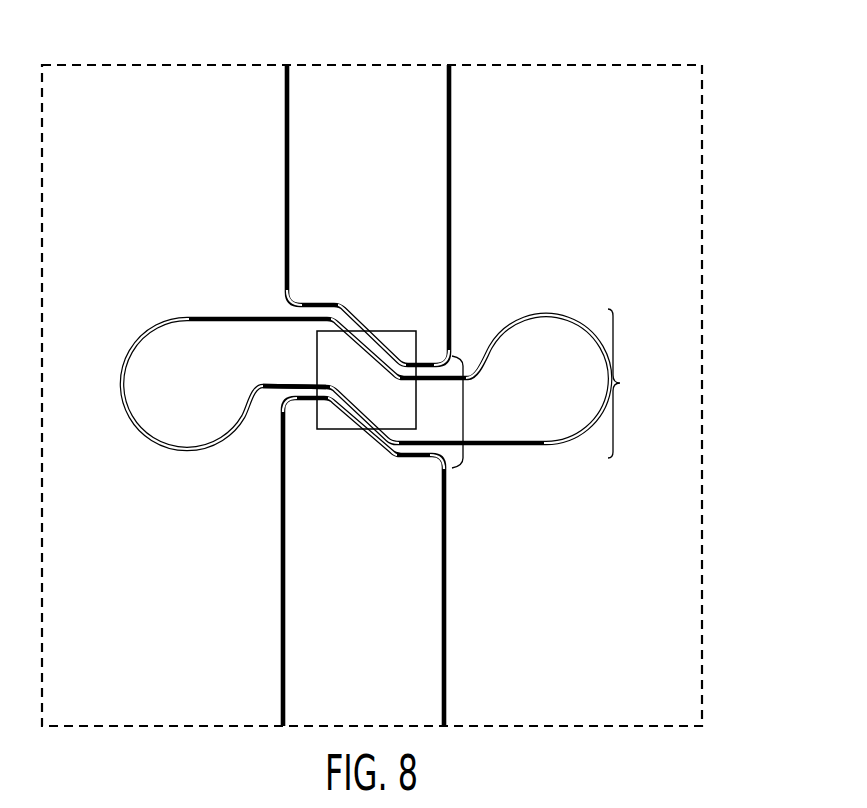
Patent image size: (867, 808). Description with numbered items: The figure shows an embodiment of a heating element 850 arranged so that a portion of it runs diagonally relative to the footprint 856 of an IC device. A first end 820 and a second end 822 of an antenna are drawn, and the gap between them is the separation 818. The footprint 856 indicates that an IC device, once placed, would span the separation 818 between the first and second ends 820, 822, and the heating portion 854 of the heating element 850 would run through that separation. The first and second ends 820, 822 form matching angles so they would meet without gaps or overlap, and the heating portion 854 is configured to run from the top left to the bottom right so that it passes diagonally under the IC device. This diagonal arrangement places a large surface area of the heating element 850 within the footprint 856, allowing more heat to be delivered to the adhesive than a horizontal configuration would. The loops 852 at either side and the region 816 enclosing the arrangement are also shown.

The substrate / sensor region 816 is at (673, 65).
The separation 818 is at (467, 412).
The first end 820 is at (432, 147).
The second end 822 is at (435, 648).
The heating element 850 is at (636, 383).
The loop 852 is at (155, 348).
The heating portion 854 is at (287, 369).
The footprint 856 is at (317, 432).